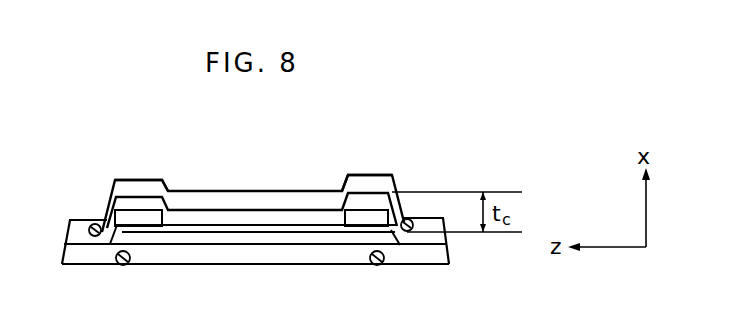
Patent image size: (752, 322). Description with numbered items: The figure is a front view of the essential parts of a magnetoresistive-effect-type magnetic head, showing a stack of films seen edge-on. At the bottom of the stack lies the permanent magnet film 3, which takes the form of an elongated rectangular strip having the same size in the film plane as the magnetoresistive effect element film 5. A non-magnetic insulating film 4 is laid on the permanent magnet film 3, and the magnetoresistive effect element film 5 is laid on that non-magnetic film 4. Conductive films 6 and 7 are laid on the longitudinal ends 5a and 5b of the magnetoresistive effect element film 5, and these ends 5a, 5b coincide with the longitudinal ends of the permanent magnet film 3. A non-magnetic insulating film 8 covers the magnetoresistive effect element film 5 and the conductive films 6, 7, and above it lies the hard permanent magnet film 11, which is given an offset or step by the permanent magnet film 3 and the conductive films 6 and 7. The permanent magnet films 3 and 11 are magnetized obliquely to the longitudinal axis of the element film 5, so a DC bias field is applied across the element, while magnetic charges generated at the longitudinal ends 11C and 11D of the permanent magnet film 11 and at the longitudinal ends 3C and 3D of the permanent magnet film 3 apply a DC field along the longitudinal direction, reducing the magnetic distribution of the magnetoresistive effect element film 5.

The permanent magnet film 3 is at (243, 262).
The longitudinal end of permanent magnet film 3C is at (148, 262).
The longitudinal end of permanent magnet film 3D is at (360, 258).
The non-magnetic insulating film 4 is at (295, 240).
The magnetoresistive effect element film 5 is at (207, 229).
The longitudinal end of magnetoresistive effect element film 5a is at (122, 229).
The longitudinal end of magnetoresistive effect element film 5b is at (392, 247).
The conductive film 6 is at (144, 212).
The conductive film 7 is at (370, 212).
The non-magnetic insulating film 8 is at (219, 210).
The hard permanent magnet film 11 is at (268, 200).
The longitudinal end of permanent magnet film 11C is at (128, 188).
The longitudinal end of permanent magnet film 11D is at (348, 180).